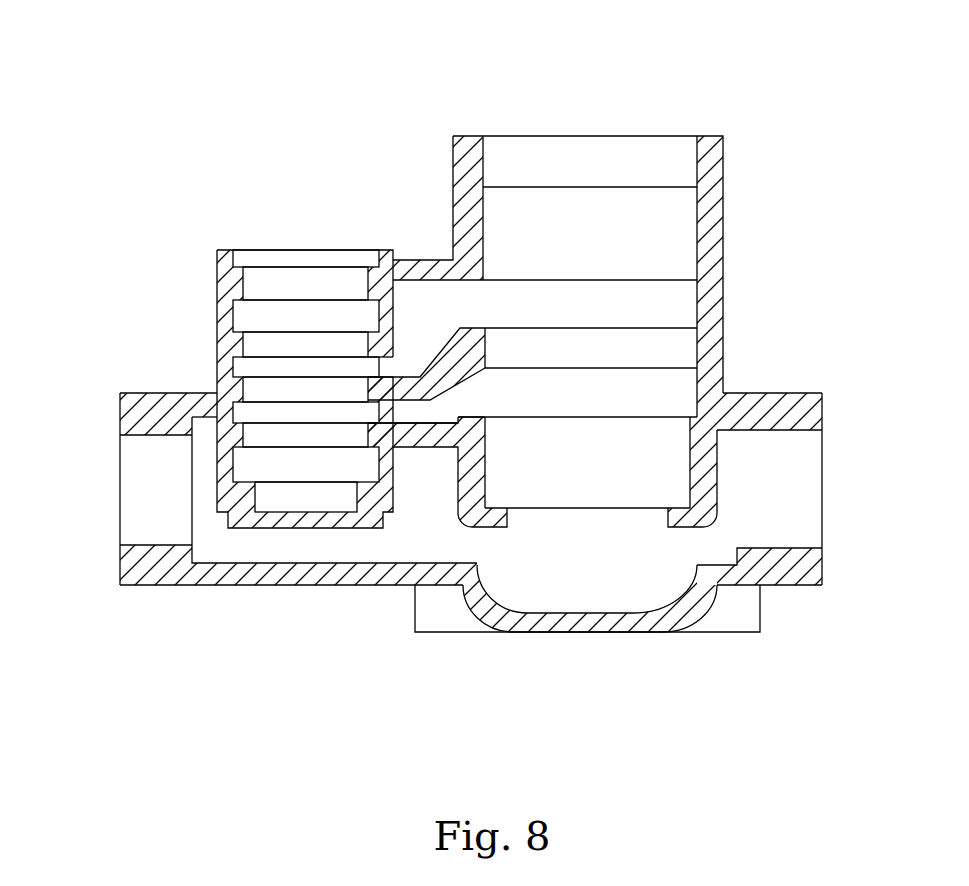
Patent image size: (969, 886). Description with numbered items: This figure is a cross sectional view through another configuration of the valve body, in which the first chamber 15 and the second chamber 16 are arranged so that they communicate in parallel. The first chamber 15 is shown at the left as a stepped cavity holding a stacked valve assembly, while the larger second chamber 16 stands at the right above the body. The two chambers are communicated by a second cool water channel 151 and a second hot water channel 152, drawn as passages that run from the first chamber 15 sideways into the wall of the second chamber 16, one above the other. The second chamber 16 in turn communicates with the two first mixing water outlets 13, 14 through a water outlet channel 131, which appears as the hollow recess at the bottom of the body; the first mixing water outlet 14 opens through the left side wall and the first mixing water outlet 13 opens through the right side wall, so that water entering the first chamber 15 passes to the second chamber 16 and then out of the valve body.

The first mixing water outlet 13 is at (797, 473).
The water outlet channel 131 is at (606, 575).
The first mixing water outlet 14 is at (135, 498).
The first chamber 15 is at (300, 283).
The second cool water channel 151 is at (425, 312).
The second hot water channel 152 is at (447, 407).
The second chamber 16 is at (568, 165).